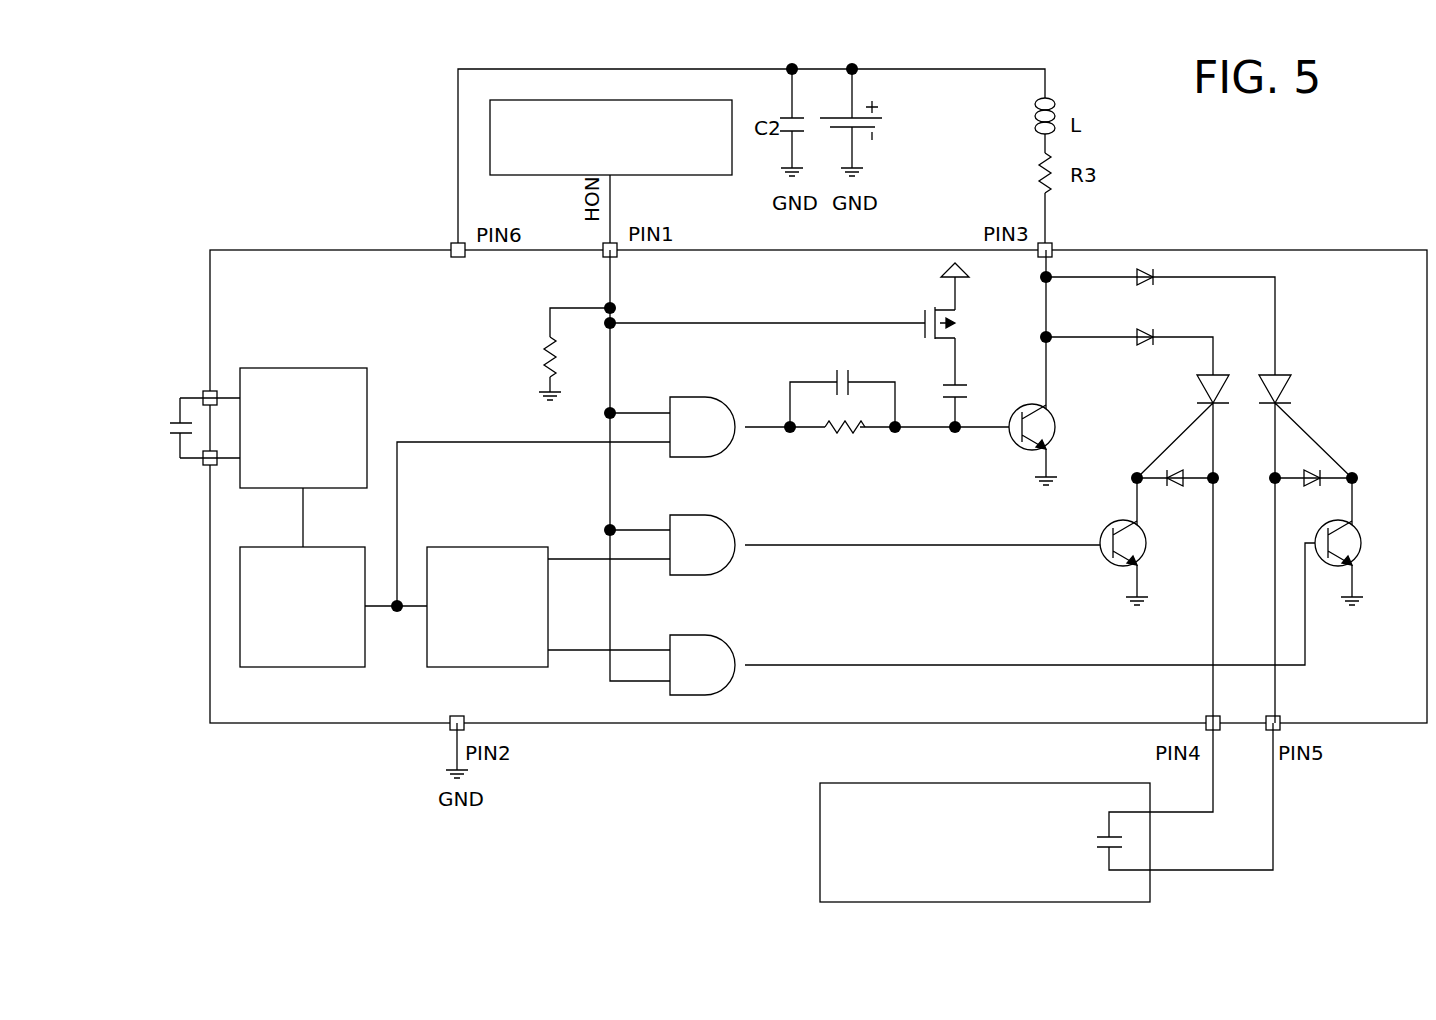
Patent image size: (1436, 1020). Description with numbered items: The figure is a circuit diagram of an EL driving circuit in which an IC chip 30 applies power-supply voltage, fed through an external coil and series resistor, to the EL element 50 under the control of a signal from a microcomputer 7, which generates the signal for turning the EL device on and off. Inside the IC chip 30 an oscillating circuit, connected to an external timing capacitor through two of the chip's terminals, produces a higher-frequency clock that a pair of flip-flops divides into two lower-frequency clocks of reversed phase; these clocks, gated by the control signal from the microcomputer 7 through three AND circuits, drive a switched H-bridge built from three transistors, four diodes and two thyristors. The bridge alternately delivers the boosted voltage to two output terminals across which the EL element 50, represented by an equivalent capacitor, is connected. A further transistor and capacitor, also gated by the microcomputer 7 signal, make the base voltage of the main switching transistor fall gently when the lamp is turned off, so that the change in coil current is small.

The microcomputer 7 is at (507, 160).
The IC chip 30 is at (1213, 250).
The EL element 50 is at (820, 873).